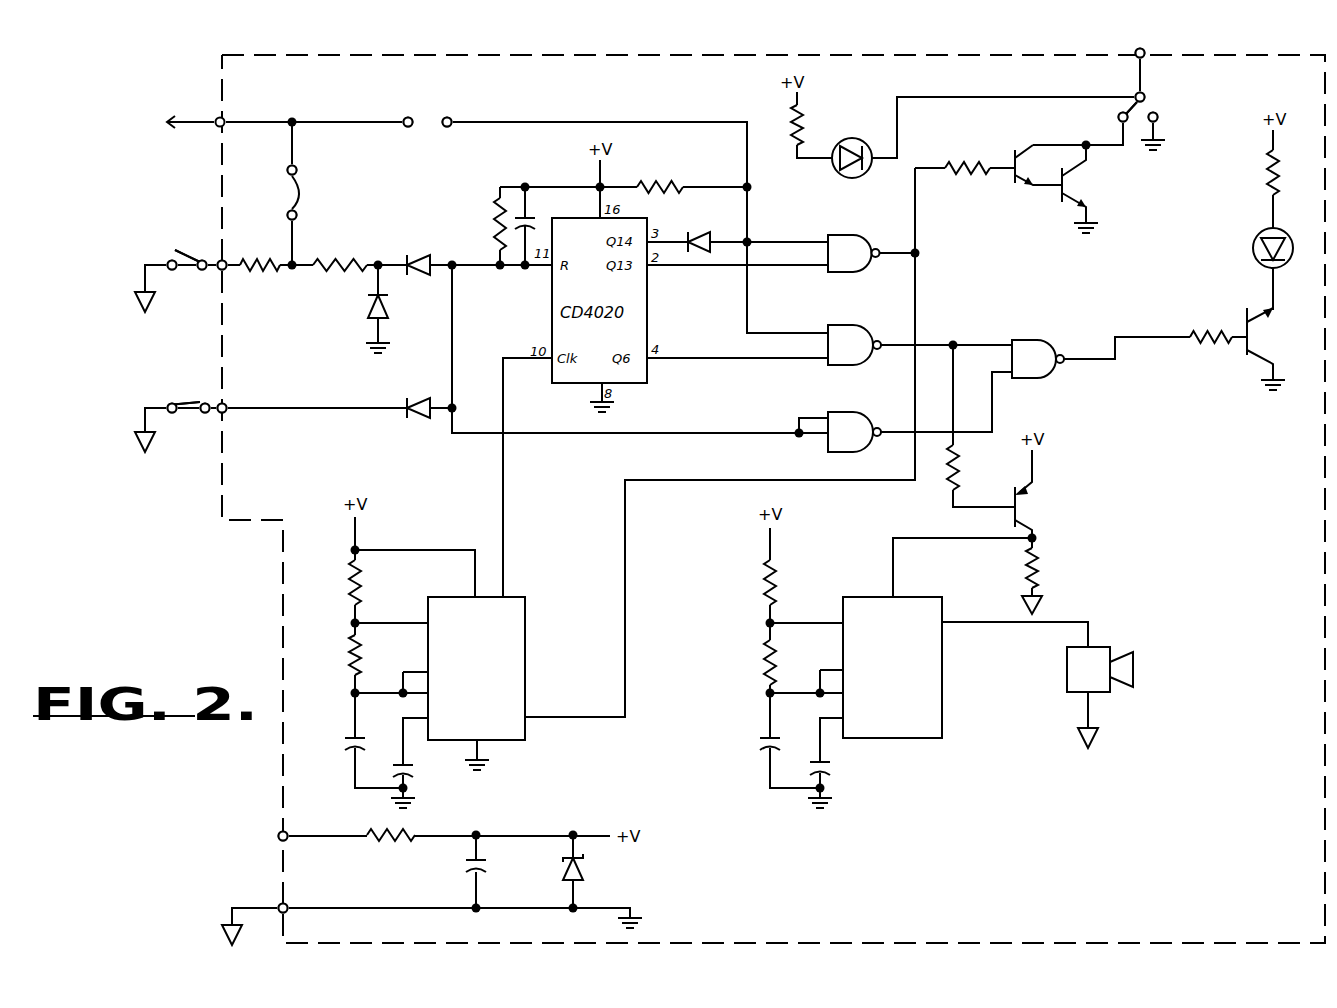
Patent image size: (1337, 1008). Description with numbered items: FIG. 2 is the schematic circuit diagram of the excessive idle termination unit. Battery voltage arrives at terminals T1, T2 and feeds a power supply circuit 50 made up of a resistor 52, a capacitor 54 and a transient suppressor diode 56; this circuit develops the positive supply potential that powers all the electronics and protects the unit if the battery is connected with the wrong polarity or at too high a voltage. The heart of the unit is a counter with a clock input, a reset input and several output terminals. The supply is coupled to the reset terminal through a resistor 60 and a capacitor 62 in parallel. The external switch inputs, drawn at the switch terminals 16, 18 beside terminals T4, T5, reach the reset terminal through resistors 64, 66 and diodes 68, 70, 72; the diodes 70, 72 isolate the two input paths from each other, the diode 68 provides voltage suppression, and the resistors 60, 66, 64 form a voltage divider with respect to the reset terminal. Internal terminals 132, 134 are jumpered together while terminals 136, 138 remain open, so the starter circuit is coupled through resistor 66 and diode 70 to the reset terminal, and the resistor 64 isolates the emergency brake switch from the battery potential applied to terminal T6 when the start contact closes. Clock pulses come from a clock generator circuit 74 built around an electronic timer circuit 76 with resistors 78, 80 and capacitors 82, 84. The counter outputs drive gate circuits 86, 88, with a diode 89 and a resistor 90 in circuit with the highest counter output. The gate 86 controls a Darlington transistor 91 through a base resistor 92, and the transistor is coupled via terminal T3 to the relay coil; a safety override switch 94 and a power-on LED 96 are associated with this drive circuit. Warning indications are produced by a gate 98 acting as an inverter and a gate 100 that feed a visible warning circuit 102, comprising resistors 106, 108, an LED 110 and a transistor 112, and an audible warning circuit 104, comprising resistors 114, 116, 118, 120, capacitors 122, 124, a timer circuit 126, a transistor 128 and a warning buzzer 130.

The alarm set switch 16 is at (195, 400).
The reset switch 18 is at (175, 256).
The circuit 50 is at (508, 825).
The resistor 52 is at (392, 848).
The capacitor 54 is at (487, 865).
The transient suppressor diode 56 is at (585, 868).
The resistor 60 is at (497, 212).
The capacitor 62 is at (528, 212).
The resistor 64 is at (262, 275).
The resistor 66 is at (335, 275).
The diode 68 is at (370, 312).
The diode 70 is at (418, 257).
The diode 72 is at (420, 420).
The clock generator circuit 74 is at (555, 612).
The electronic timer circuit 76 is at (527, 657).
The resistor 78 is at (350, 580).
The resistor 80 is at (350, 660).
The capacitor 82 is at (345, 745).
The capacitor 84 is at (412, 772).
The gate circuit 86 is at (846, 236).
The gate circuit 88 is at (855, 326).
The diode 89 is at (700, 232).
The resistor 90 is at (660, 182).
The Darlington transistor 91 is at (1082, 190).
The resistor 92 is at (968, 178).
The safety override switch 94 is at (1150, 106).
The LED 96 is at (852, 136).
The gate 98 is at (855, 412).
The gate 100 is at (1032, 338).
The visible warning circuit 102 is at (1204, 292).
The audible warning circuit 104 is at (1070, 519).
The resistor 106 is at (1210, 348).
The resistor 108 is at (1266, 172).
The LED 110 is at (1255, 243).
The transistor 112 is at (1262, 332).
The resistor 114 is at (960, 466).
The resistor 116 is at (1040, 568).
The resistor 118 is at (780, 578).
The resistor 120 is at (762, 652).
The capacitor 122 is at (760, 742).
The capacitor 124 is at (830, 768).
The timer circuit 126 is at (942, 738).
The transistor 128 is at (1035, 495).
The warning buzzer 130 is at (1120, 655).
The internal terminal 132 is at (297, 170).
The internal terminal 134 is at (297, 215).
The internal terminal 136 is at (408, 116).
The internal terminal 138 is at (450, 118).
The terminal T1 is at (278, 906).
The terminal T2 is at (278, 834).
The terminal T3 is at (1146, 52).
The terminal T4 is at (218, 272).
The terminal T5 is at (218, 415).
The terminal T6 is at (217, 128).